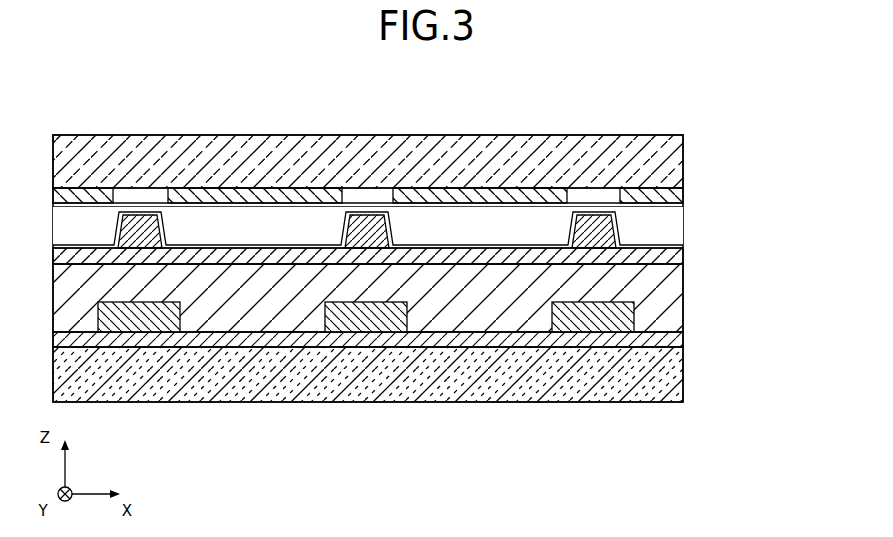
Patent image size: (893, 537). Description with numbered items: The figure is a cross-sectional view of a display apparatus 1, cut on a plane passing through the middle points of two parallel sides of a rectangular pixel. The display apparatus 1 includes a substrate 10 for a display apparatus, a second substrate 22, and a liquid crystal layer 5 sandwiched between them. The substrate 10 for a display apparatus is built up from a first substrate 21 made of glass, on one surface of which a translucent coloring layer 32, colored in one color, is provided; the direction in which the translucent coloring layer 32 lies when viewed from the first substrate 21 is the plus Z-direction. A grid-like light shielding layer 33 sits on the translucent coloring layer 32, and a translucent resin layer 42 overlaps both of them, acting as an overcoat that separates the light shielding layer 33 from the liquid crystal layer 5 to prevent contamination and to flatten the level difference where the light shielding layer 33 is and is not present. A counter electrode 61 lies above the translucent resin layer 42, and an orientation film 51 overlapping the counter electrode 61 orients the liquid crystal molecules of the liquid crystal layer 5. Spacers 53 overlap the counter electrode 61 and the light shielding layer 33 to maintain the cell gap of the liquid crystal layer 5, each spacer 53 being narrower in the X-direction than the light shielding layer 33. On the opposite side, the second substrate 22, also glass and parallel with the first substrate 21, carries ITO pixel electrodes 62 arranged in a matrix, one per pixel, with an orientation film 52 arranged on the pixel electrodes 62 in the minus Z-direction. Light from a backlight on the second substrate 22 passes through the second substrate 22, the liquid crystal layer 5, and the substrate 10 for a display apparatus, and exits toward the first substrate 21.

The display apparatus 1 is at (672, 104).
The second substrate 22 is at (683, 164).
The pixel electrode 62 is at (243, 197).
The orientation film 52 is at (683, 209).
The liquid crystal layer 5 is at (677, 228).
The orientation film 51 is at (683, 247).
The spacer 53 is at (137, 213).
The counter electrode 61 is at (677, 257).
The translucent resin layer 42 is at (683, 290).
The light shielding layer 33 is at (625, 316).
The translucent coloring layer 32 is at (677, 338).
The first substrate 21 is at (678, 375).
The substrate for a display apparatus 10 is at (770, 237).